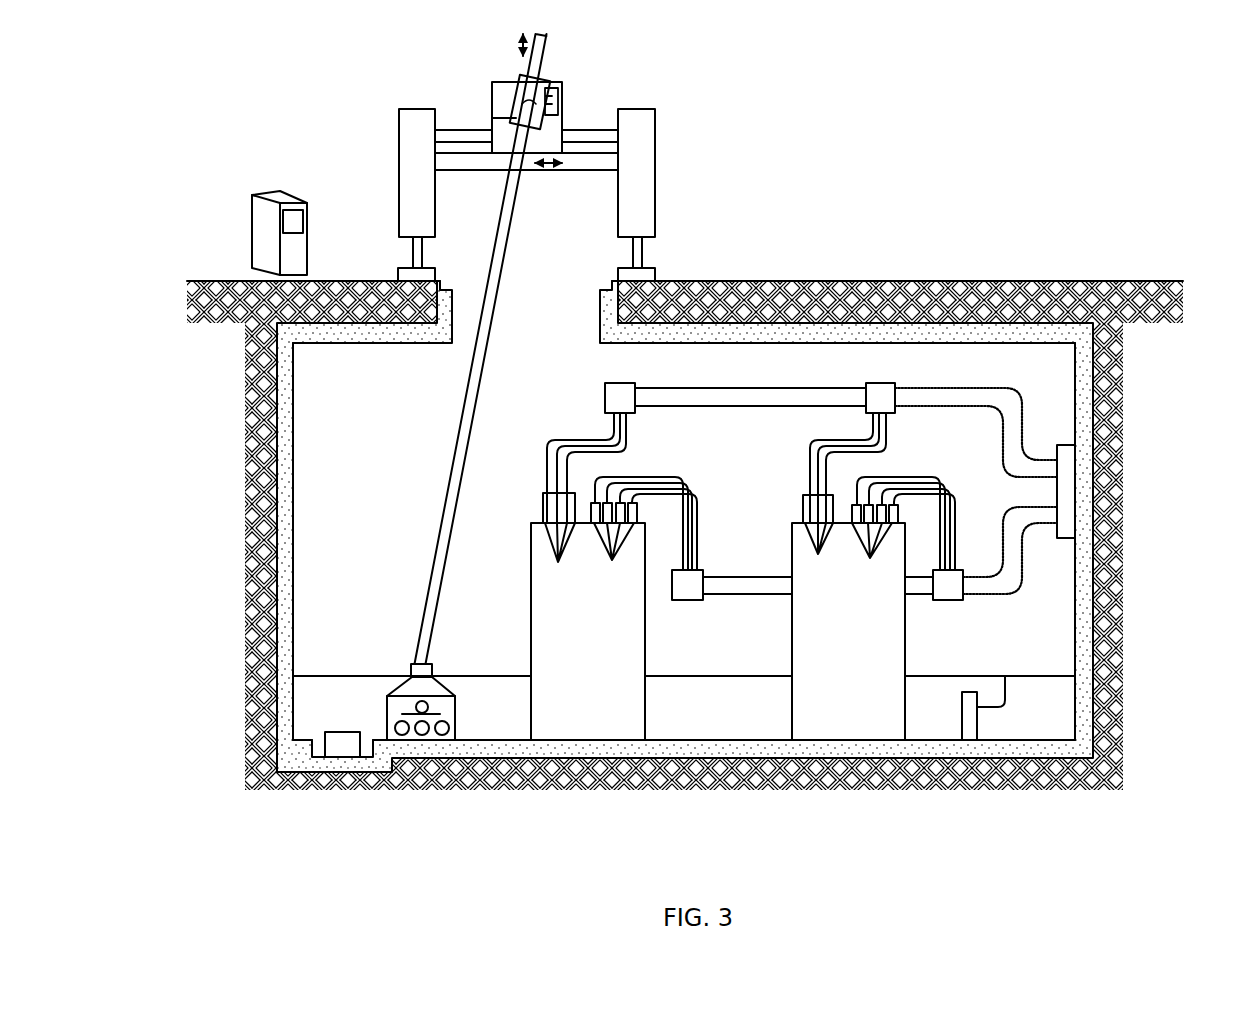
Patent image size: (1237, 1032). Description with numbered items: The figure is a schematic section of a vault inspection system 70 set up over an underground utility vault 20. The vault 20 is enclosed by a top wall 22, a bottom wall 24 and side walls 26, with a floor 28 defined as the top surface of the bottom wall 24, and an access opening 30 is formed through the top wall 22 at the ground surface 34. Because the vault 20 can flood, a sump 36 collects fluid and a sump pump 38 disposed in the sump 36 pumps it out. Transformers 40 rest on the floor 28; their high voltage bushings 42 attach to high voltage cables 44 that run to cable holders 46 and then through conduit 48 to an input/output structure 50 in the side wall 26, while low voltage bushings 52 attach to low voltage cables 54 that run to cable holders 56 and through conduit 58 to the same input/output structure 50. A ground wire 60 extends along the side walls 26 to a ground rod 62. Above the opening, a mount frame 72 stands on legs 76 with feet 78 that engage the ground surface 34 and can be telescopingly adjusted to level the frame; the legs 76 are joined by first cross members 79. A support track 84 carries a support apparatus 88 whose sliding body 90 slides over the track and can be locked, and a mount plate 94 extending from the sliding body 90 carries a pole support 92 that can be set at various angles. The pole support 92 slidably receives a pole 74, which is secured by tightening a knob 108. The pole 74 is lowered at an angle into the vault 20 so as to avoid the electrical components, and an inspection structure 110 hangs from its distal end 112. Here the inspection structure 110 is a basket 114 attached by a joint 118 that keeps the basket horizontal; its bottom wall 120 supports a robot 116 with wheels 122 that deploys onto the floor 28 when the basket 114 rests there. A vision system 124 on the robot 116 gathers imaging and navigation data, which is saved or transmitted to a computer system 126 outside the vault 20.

The underground utility vault 20 is at (1157, 407).
The top wall 22 is at (805, 333).
The bottom wall 24 is at (688, 745).
The side walls 26 is at (285, 545).
The floor 28 is at (712, 740).
The access opening 30 is at (572, 309).
The ground surface 34 is at (925, 281).
The sump 36 is at (312, 750).
The sump pump 38 is at (340, 728).
The transformers 40 is at (590, 715).
The high voltage bushings 42 is at (687, 543).
The high voltage cable 44 is at (588, 446).
The cable holders 46 is at (620, 383).
The conduit 48 is at (688, 388).
The input/output structure 50 is at (1068, 487).
The low voltage bushing 52 is at (744, 548).
The low voltage cable 54 is at (640, 483).
The cable holders 56 is at (690, 600).
The conduit 58 is at (748, 577).
The ground wire 60 is at (1043, 678).
The ground rod 62 is at (937, 733).
The vault inspection system 70 is at (720, 85).
The mount frame 72 is at (667, 147).
The pole 74 is at (452, 470).
The legs 76 is at (399, 148).
The feet 78 is at (410, 268).
The first cross members 79 is at (474, 163).
The support track 84 is at (597, 135).
The support apparatus 88 is at (572, 113).
The sliding body 90 is at (502, 127).
The pole support 92 is at (508, 80).
The mount plate 94 is at (497, 100).
The knob 108 is at (565, 102).
The inspection structure 110 is at (392, 680).
The distal end 112 is at (420, 663).
The basket 114 is at (448, 690).
The robot 116 is at (443, 722).
The joint 118 is at (436, 672).
The bottom wall 120 is at (460, 725).
The wheels 122 is at (441, 737).
The vision system 124 is at (413, 707).
The computer system 126 is at (252, 232).